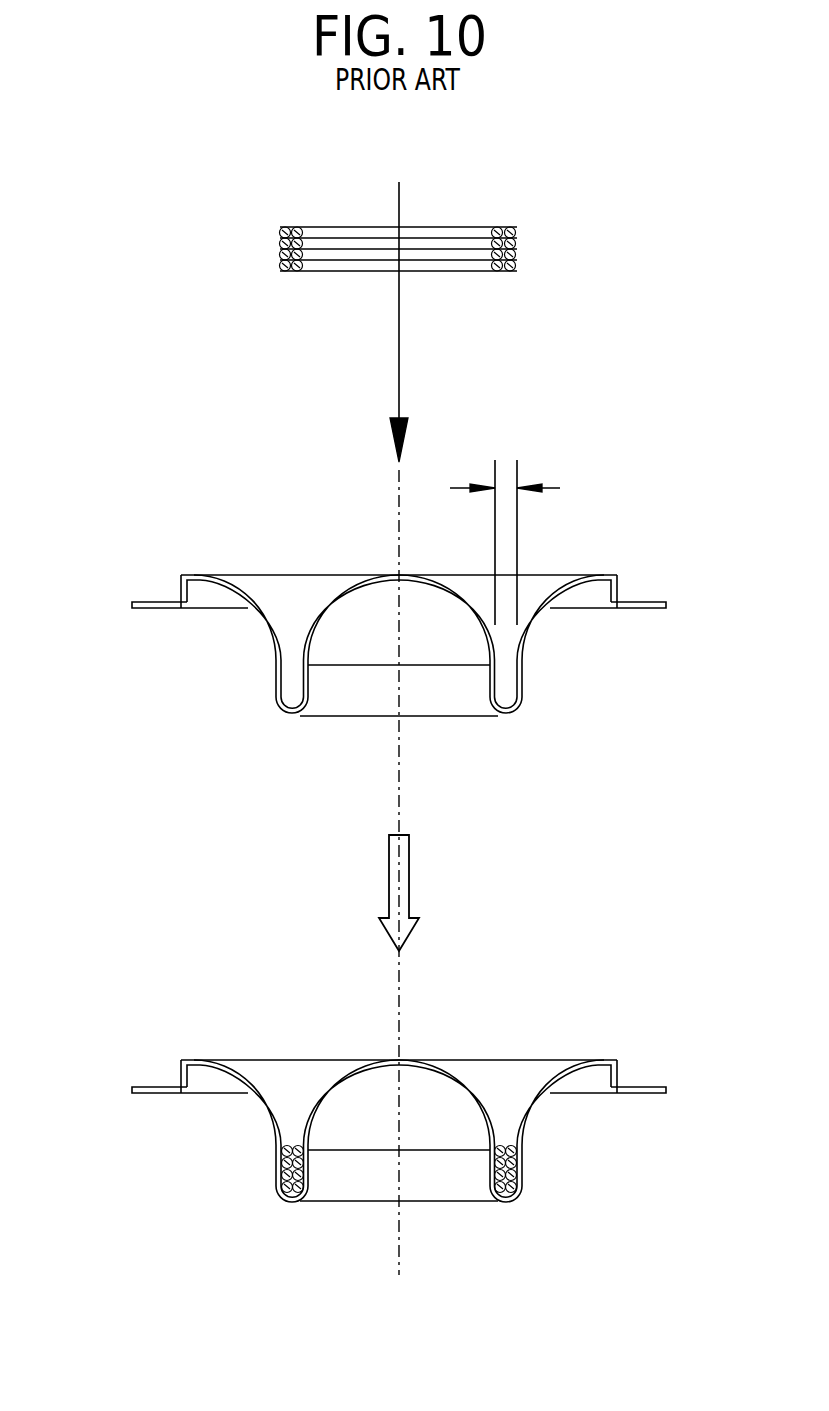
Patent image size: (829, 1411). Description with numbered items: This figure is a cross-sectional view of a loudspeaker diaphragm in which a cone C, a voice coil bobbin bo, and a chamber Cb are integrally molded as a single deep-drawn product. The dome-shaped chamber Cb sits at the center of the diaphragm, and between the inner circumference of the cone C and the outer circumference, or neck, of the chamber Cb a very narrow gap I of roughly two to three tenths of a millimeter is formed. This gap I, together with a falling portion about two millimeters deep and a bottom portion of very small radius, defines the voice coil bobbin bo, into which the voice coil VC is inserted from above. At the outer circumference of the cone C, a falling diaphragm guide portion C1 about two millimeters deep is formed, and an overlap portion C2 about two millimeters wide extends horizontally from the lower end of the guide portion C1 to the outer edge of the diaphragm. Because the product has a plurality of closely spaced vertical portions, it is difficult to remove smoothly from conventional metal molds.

The voice coil VC is at (283, 222).
The gap I is at (506, 487).
The cone C is at (261, 608).
The chamber Cb is at (341, 594).
The diaphragm guide portion C1 is at (180, 592).
The overlap portion C2 is at (155, 612).
The voice coil bobbin bo is at (248, 752).